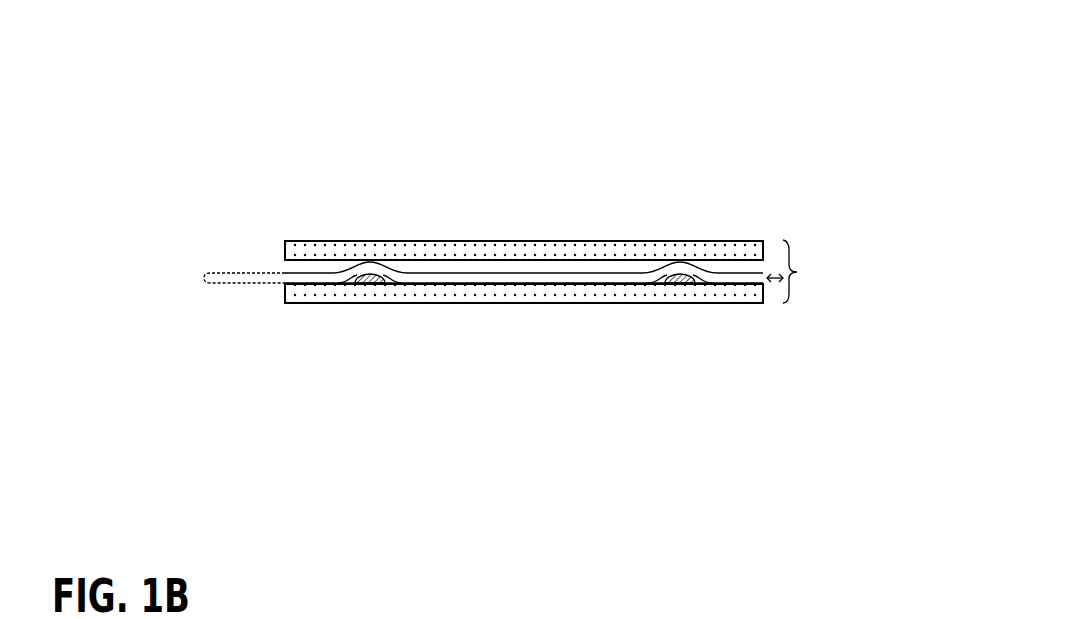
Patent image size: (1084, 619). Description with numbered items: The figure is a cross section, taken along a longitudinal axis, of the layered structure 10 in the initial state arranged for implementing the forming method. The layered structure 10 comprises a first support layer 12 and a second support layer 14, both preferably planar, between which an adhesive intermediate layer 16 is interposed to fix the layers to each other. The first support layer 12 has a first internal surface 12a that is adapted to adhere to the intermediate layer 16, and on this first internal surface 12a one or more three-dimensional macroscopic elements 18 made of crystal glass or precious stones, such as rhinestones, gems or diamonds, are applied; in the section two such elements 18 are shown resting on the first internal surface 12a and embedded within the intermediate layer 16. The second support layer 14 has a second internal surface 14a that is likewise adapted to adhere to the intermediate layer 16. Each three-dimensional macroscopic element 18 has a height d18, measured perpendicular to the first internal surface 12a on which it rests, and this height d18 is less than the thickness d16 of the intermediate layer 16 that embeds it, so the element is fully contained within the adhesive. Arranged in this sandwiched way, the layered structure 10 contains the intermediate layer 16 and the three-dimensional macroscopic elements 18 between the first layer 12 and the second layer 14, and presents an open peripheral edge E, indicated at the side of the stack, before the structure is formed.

The layered structure 10 is at (190, 166).
The first support layer 12 is at (569, 329).
The first internal surface 12a is at (516, 284).
The second support layer 14 is at (435, 215).
The second internal surface 14a is at (628, 259).
The adhesive intermediate layer 16 is at (558, 275).
The three-dimensional macroscopic element 18 is at (367, 290).
The height of the three-dimensional macroscopic element d18 is at (198, 278).
The thickness of the intermediate layer d16 is at (784, 278).
The open peripheral edge E is at (802, 272).